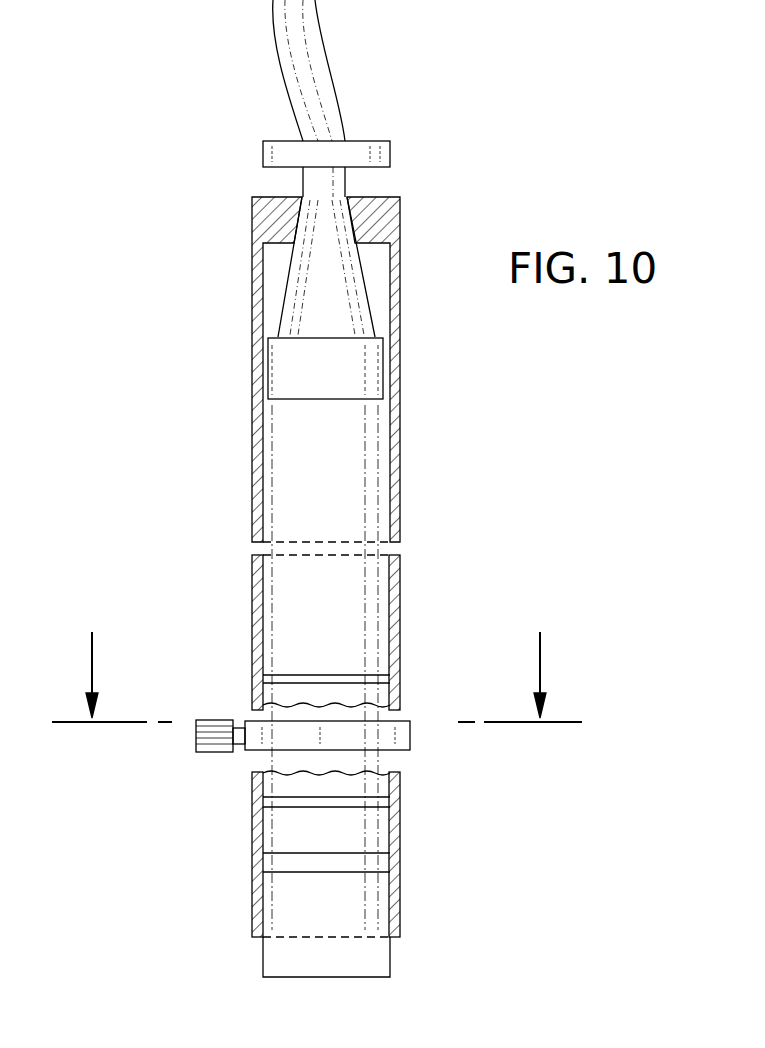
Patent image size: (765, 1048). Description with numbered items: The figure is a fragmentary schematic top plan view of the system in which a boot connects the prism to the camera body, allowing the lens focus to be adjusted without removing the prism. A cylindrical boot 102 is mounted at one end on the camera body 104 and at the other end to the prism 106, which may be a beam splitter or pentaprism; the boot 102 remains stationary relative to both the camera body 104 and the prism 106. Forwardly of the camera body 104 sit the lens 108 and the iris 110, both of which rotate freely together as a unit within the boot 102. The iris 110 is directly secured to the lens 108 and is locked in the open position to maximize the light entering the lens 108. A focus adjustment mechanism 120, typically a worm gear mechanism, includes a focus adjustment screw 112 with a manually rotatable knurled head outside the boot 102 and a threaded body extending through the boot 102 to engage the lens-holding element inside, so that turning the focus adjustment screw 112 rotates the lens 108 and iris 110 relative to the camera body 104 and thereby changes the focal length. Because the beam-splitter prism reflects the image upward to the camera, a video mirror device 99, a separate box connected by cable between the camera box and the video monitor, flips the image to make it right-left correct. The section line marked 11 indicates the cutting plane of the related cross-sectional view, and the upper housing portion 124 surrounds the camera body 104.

The section line 11- 11 is at (317, 661).
The video mirror device 99 is at (390, 157).
The cylindrical boot 102 is at (400, 603).
The camera body 104 is at (355, 432).
The prism 106 is at (305, 955).
The lens 108 is at (372, 692).
The iris 110 is at (292, 827).
The focus adjustment screw 112 is at (212, 755).
The focus adjustment mechanism 120 is at (405, 737).
The upper housing 124 is at (252, 291).